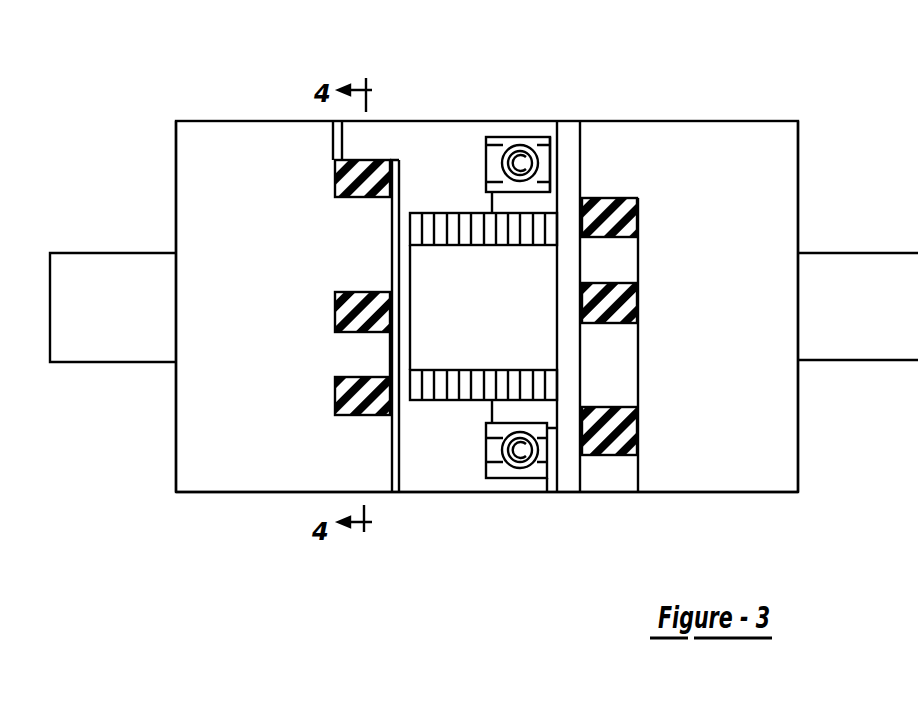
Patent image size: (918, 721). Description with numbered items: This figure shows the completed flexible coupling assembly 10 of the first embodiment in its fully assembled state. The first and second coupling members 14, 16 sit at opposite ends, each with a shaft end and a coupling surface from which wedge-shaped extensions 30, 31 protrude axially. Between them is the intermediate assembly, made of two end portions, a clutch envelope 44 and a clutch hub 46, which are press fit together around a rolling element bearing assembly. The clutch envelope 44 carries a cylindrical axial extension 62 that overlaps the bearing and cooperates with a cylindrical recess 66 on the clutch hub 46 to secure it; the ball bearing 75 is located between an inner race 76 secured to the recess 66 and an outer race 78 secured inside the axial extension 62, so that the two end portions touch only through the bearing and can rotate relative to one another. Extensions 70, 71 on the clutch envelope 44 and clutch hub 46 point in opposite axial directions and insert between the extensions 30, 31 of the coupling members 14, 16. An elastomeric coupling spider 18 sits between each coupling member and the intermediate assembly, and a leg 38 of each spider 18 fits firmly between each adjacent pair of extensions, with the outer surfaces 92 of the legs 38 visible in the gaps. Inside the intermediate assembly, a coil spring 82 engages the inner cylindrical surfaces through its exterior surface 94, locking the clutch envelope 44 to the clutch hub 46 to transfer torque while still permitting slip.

The flexible coupling assembly 10 is at (468, 52).
The first coupling member 14 is at (238, 162).
The second coupling member 16 is at (748, 163).
The coupling spider 18 is at (363, 398).
The extension 30 is at (384, 468).
The extension 31 is at (608, 368).
The leg 38 is at (340, 303).
The clutch envelope 44 is at (455, 493).
The clutch hub 46 is at (568, 121).
The cylindrical axial extension 62 is at (519, 483).
The cylindrical recess 66 is at (548, 428).
The extension 70 is at (368, 357).
The extension 71 is at (602, 472).
The ball bearing 75 is at (525, 163).
The inner race 76 is at (543, 186).
The outer race 78 is at (505, 143).
The coil spring 82 is at (450, 392).
The outer surface of leg 92 is at (365, 165).
The exterior surface of spring 94 is at (450, 213).